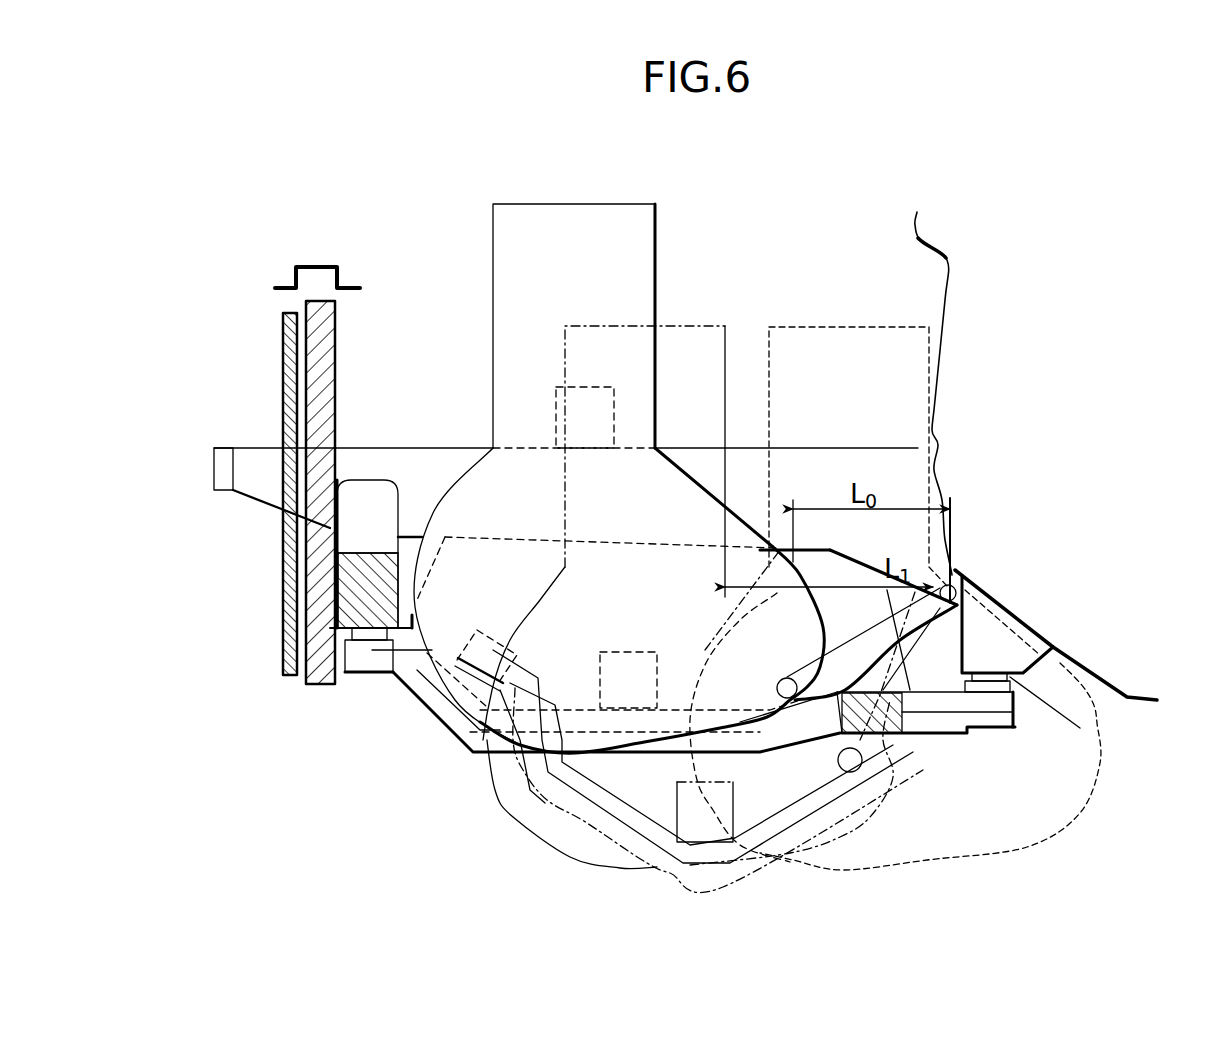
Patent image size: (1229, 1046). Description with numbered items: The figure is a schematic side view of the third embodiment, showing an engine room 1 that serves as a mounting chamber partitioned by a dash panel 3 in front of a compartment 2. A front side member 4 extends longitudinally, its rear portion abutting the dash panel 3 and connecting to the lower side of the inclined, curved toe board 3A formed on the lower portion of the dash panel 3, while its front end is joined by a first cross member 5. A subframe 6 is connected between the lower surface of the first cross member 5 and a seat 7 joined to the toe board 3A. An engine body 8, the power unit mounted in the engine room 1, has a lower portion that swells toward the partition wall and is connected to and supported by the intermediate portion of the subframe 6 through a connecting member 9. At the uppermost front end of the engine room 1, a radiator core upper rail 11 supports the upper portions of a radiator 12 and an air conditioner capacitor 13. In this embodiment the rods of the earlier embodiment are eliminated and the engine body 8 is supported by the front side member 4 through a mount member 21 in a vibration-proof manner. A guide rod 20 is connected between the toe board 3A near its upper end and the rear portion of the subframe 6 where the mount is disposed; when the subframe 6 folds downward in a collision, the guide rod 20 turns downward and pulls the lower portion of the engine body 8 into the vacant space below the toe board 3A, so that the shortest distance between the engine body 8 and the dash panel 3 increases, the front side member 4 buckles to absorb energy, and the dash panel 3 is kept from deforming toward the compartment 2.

The engine room 1 is at (814, 251).
The compartment 2 is at (1062, 397).
The dash panel 3 is at (948, 270).
The toe board 3A is at (1075, 655).
The front side member 4 is at (443, 445).
The first cross member 5 is at (322, 596).
The subframe 6 is at (425, 715).
The seat 7 is at (998, 620).
The engine body 8 is at (592, 203).
The connecting member 9 is at (620, 648).
The radiator core upper rail 11 is at (320, 263).
The radiator 12 is at (338, 340).
The air conditioner capacitor 13 is at (285, 363).
The guide rod 20 is at (880, 657).
The mount member 21 is at (590, 383).